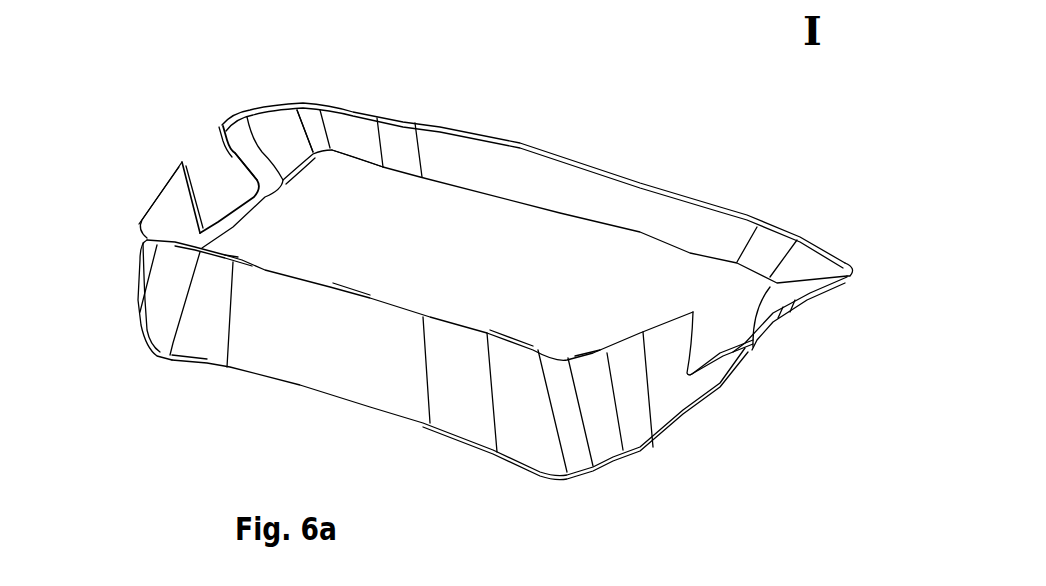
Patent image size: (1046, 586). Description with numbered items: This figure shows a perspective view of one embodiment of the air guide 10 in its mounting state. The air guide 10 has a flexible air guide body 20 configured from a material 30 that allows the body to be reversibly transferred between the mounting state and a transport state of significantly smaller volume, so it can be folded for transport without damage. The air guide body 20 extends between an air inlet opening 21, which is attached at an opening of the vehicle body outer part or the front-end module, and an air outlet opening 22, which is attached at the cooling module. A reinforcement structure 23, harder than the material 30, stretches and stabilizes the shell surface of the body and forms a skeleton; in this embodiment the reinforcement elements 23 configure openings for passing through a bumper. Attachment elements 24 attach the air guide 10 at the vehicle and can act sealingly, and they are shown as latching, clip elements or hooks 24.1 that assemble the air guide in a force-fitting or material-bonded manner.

The air guide 10 is at (464, 288).
The air guide body 20 is at (526, 200).
The air inlet opening 21 is at (533, 230).
The air outlet opening 22 is at (443, 391).
The reinforcement structure 23 is at (233, 150).
The attachment element 24 is at (352, 157).
The latching, clip elements, hooks 24.1 is at (237, 262).
The material 30 is at (443, 147).